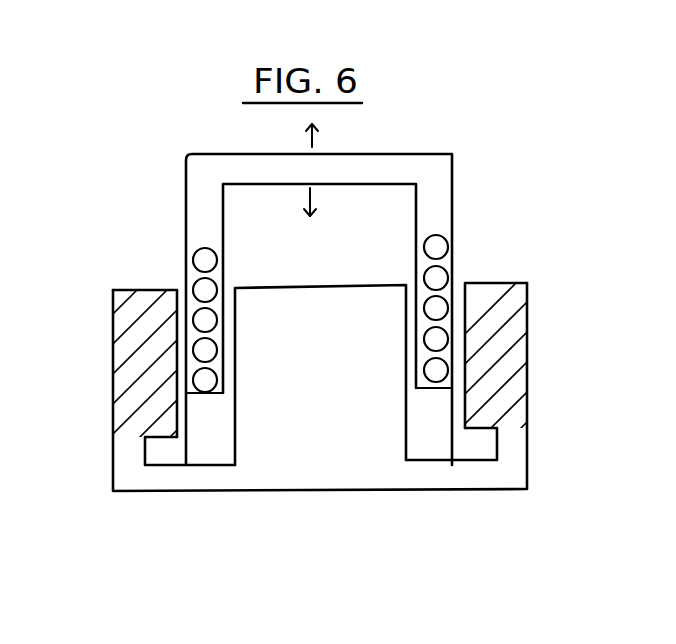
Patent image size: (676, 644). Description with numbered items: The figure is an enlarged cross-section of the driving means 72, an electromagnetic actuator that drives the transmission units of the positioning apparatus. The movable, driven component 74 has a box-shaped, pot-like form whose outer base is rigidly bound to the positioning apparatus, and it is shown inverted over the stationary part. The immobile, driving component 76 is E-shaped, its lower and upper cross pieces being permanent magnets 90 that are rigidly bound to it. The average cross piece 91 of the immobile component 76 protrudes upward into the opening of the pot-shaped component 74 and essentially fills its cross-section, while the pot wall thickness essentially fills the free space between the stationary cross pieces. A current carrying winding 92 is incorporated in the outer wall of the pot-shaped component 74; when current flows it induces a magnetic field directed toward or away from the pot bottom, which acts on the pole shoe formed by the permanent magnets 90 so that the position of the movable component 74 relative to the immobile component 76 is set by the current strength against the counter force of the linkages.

The driving means 72 is at (98, 185).
The movable driven component 74 is at (437, 193).
The immobile driving component 76 is at (460, 480).
The permanent magnet 90 is at (130, 353).
The average cross piece 91 is at (320, 375).
The current carrying winding 92 is at (203, 258).